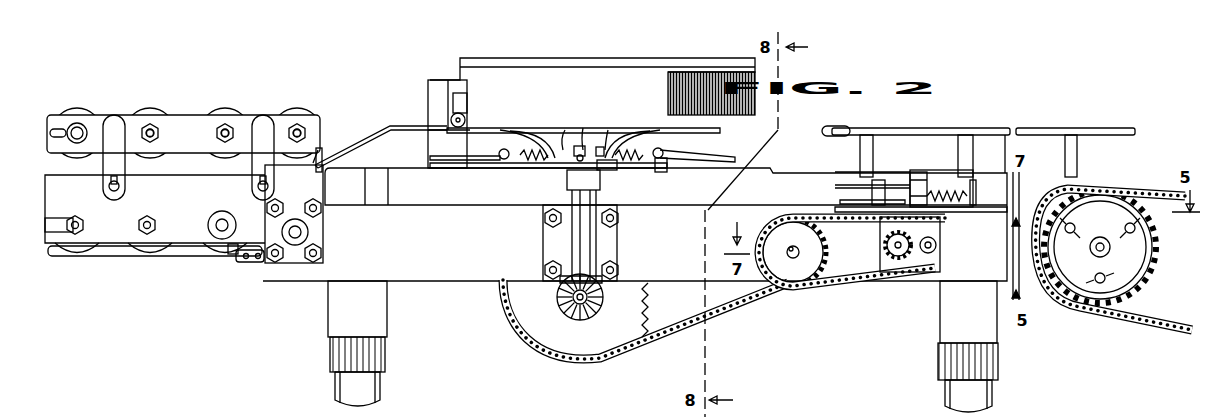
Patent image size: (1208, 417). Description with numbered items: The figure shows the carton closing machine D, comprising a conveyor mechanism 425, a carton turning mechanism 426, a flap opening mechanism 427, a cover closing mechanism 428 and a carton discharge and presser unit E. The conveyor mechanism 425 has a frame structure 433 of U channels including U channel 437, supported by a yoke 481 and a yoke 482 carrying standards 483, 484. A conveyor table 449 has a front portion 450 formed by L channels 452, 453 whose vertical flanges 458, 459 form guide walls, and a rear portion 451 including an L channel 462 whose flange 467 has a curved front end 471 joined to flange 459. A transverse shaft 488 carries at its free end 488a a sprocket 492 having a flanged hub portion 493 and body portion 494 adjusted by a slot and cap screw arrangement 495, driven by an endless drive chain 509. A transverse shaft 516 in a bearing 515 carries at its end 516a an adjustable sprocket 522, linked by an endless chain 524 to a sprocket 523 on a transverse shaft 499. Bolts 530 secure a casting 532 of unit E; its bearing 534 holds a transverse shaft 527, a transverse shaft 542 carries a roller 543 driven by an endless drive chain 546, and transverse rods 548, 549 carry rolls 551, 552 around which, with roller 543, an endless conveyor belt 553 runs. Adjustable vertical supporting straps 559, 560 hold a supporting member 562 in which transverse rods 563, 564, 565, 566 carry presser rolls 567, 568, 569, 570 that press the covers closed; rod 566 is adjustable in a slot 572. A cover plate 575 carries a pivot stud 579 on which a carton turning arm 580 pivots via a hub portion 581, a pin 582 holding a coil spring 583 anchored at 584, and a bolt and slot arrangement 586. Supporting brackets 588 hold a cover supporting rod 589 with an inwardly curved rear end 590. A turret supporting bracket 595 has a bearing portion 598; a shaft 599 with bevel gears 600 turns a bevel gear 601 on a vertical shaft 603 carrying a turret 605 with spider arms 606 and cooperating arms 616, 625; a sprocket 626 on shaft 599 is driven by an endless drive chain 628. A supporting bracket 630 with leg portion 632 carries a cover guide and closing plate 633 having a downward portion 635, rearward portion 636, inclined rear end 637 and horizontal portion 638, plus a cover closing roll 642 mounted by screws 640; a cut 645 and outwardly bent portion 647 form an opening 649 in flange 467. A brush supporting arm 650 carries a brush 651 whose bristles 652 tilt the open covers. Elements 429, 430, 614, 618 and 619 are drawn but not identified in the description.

The sprocket 425 is at (1070, 178).
The bracket 426 is at (880, 170).
The pivot pin 427 is at (592, 128).
The block 428 is at (425, 125).
The bottom rail 429 is at (165, 254).
The rollers 430 is at (78, 111).
The plate 433 is at (990, 243).
The main frame 437 is at (446, 272).
The rod 449 is at (767, 176).
The housing 450 is at (963, 168).
The frame portion 451 is at (444, 206).
The sprocket plate 452 is at (1062, 190).
The post 453 is at (998, 177).
The bracket 458 is at (1040, 175).
The bracket arm 459 is at (1030, 180).
The mounting plate 462 is at (496, 206).
The assembly 467 is at (494, 185).
The frame member 471 is at (820, 185).
The leg 481 is at (990, 332).
The leg 482 is at (346, 321).
The foot 483 is at (992, 398).
The foot 484 is at (345, 385).
The hub 488 is at (1092, 250).
The hub pin 488a is at (1102, 258).
The sprocket wheel 492 is at (1105, 296).
The sprocket rim 493 is at (1124, 306).
The sprocket teeth 494 is at (1152, 304).
The bolts 495 is at (1076, 223).
The chain 499 is at (828, 284).
The chain 509 is at (1062, 310).
The bracket 515 is at (895, 277).
The pinion 516 is at (918, 247).
The plate 516a is at (1030, 243).
The gear 522 is at (886, 239).
The sprocket 523 is at (793, 262).
The shaft 524 is at (798, 262).
The plate 527 is at (309, 233).
The bolts 530 is at (283, 207).
The frame 532 is at (155, 209).
The bolts 534 is at (305, 240).
The bolt 542 is at (220, 225).
The bracket 543 is at (232, 256).
The link 546 is at (248, 264).
The bolt 548 is at (142, 220).
The bolt 549 is at (85, 224).
The rail 551 is at (130, 255).
The rail end 552 is at (58, 249).
The rail 553 is at (178, 256).
The hanger 559 is at (256, 167).
The hanger 560 is at (120, 168).
The bolt 562 is at (184, 117).
The bolt 563 is at (304, 133).
The bolt 564 is at (215, 131).
The bolt 565 is at (160, 136).
The bolt 566 is at (95, 149).
The bolt 567 is at (300, 111).
The bolt 568 is at (217, 111).
The rail 569 is at (157, 110).
The bolt 570 is at (90, 111).
The slot 572 is at (68, 128).
The pin 575 is at (973, 206).
The cylinder 579 is at (919, 171).
The bar 580 is at (880, 174).
The cylinder part 581 is at (917, 184).
The block 582 is at (895, 195).
The spring 583 is at (944, 194).
The bar 584 is at (962, 212).
The bar 586 is at (882, 203).
The posts 588 is at (867, 135).
The rail joint 589 is at (1018, 130).
The rail 590 is at (850, 128).
The shaft 595 is at (600, 243).
The sprocket 598 is at (572, 248).
The sprocket teeth 599 is at (557, 290).
The hub 600 is at (566, 299).
The plate 601 is at (568, 282).
The spring 603 is at (648, 299).
The block 605 is at (632, 173).
The link 606 is at (545, 195).
The bar 614 is at (520, 166).
The lever 616 is at (440, 157).
The spring 618 is at (527, 152).
The rods 619 is at (580, 140).
The bar 625 is at (553, 130).
The chain 626 is at (545, 336).
The chain 628 is at (716, 325).
The block 630 is at (435, 120).
The block 632 is at (432, 108).
The plate 633 is at (470, 94).
The plate 635 is at (470, 101).
The arm 636 is at (417, 126).
The arm 637 is at (338, 152).
The link 638 is at (316, 166).
The cam 640 is at (465, 118).
The plate 642 is at (470, 109).
The frame portion 645 is at (395, 210).
The tab 647 is at (380, 176).
The block 649 is at (390, 185).
The housing 650 is at (462, 68).
The brush holder 651 is at (706, 72).
The brush 652 is at (690, 92).
The direction D is at (720, 284).
The direction E is at (146, 106).